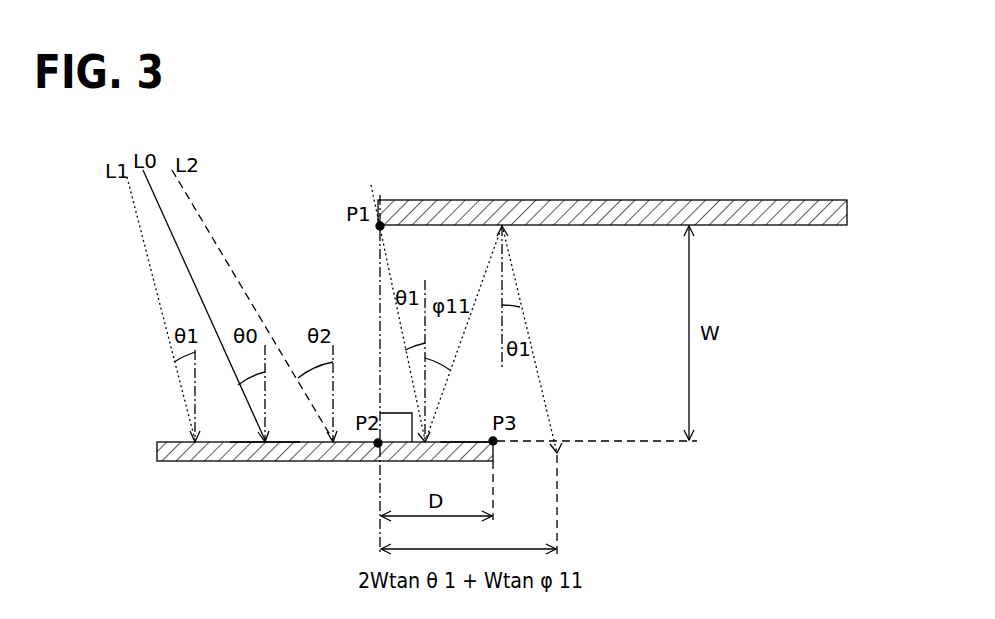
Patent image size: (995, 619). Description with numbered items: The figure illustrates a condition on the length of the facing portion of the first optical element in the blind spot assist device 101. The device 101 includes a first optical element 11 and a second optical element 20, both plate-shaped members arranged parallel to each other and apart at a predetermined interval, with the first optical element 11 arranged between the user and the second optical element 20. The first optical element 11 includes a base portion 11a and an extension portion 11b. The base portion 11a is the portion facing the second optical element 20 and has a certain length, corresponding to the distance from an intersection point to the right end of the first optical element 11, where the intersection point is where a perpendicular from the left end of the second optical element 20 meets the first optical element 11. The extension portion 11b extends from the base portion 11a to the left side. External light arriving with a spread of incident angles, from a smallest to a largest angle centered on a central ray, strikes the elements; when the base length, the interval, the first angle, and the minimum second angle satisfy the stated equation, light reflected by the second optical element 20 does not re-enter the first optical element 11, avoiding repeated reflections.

The first optical element 11 is at (180, 462).
The base portion 11a is at (473, 441).
The extension portion 11b is at (265, 462).
The second optical element 20 is at (797, 200).
The blind spot assist device 101 is at (792, 325).